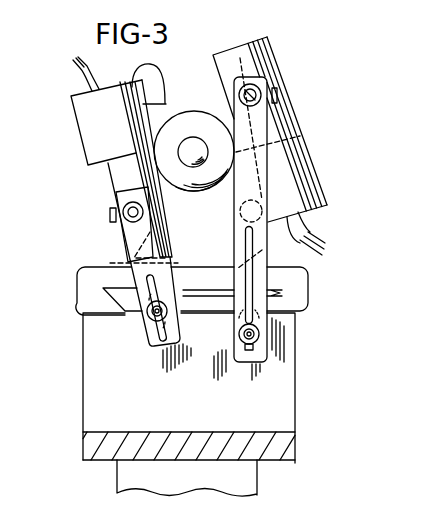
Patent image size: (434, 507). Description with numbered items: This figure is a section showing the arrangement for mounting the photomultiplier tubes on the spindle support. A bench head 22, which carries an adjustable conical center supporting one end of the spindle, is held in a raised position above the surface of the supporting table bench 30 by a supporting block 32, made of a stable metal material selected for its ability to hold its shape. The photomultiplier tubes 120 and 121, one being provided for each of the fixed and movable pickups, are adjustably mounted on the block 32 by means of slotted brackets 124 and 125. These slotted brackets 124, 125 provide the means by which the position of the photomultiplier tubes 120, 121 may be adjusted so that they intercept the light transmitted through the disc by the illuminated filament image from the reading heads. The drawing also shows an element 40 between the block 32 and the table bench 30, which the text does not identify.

The bench head 22 is at (193, 117).
The supporting table bench 30 is at (126, 474).
The supporting block 32 is at (283, 382).
The mounting pad 40 is at (90, 443).
The photomultiplier tube 120 is at (102, 178).
The photomultiplier tube 121 is at (288, 114).
The slotted bracket 124 is at (140, 278).
The slotted bracket 125 is at (262, 277).